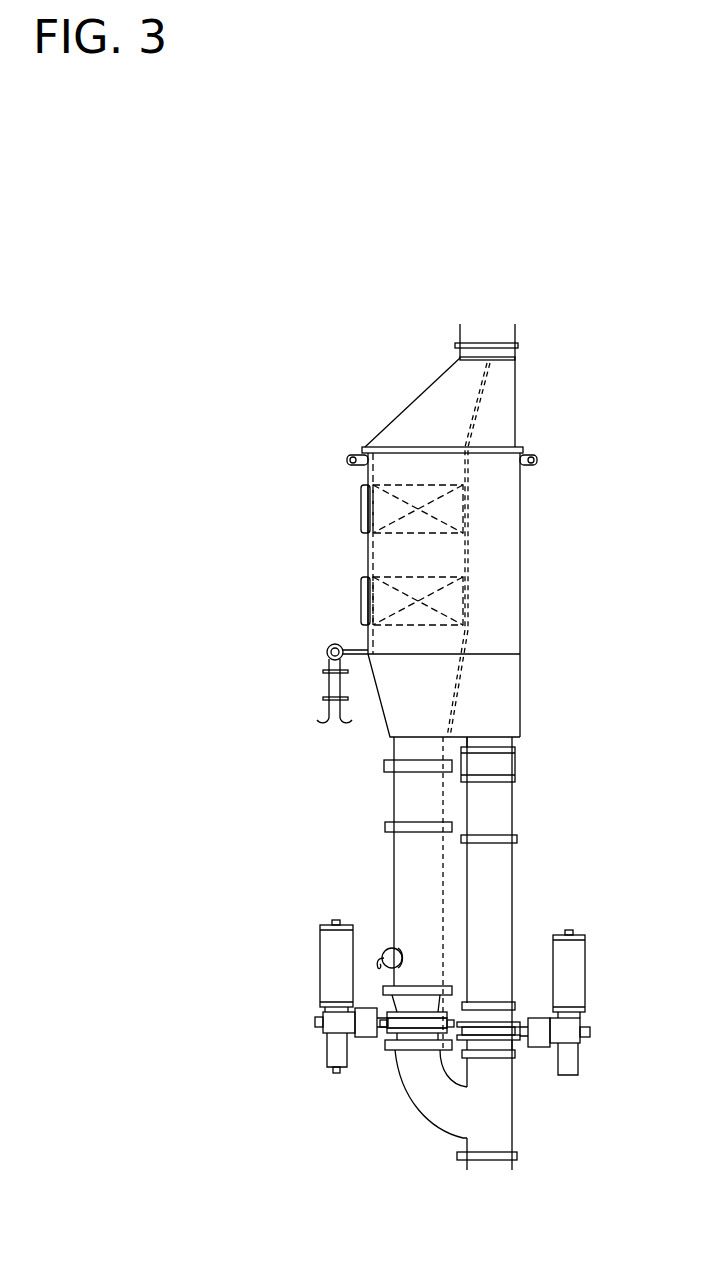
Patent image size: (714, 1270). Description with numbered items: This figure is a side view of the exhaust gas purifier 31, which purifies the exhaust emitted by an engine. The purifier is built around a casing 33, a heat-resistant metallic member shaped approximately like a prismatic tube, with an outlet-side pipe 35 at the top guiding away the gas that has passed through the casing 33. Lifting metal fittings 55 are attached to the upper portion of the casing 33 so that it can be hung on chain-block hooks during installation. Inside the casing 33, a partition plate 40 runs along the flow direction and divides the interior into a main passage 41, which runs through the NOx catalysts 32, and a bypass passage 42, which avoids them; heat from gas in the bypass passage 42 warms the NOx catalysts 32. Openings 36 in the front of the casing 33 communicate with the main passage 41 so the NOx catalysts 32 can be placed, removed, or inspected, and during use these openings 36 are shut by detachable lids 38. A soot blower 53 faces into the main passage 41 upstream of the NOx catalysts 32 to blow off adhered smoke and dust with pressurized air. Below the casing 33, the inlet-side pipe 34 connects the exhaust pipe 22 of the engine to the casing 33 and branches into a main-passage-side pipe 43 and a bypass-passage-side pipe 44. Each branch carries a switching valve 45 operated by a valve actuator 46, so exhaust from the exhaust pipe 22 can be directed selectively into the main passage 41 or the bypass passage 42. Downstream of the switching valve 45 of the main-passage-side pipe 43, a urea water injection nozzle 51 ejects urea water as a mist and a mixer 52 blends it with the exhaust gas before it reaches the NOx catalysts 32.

The exhaust gas purifier 31 is at (210, 371).
The casing 33 is at (603, 514).
The outlet-side pipe 35 is at (515, 332).
The lifting metal fittings 55 is at (350, 455).
The NOx catalyst 32 is at (355, 502).
The openings 36 is at (355, 502).
The lids 38 is at (358, 520).
The partition plate 40 is at (467, 630).
The main passage 41 is at (410, 714).
The bypass passage 42 is at (492, 711).
The soot blower 53 is at (302, 692).
The main-passage-side pipe 43 is at (400, 847).
The mixer 52 is at (398, 788).
The bypass-passage-side pipe 44 is at (502, 862).
The urea water injection nozzle 51 is at (387, 945).
The switching valve 45 is at (497, 1028).
The valve actuator 46 is at (325, 973).
The inlet-side pipe 34 is at (500, 1110).
The exhaust pipe 22 is at (507, 1165).